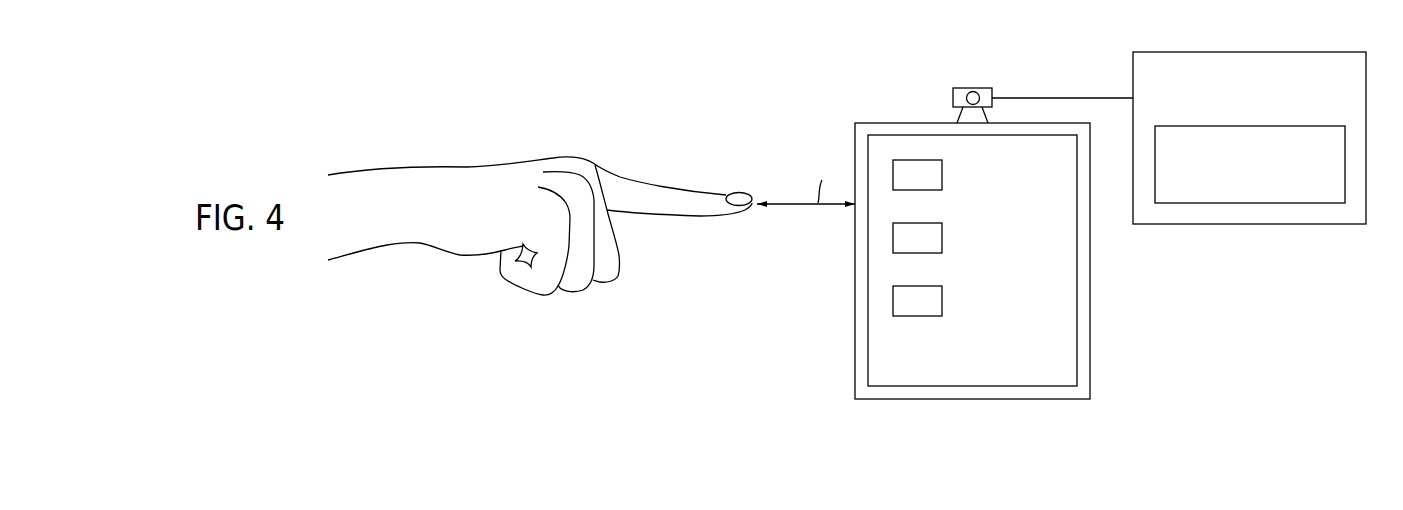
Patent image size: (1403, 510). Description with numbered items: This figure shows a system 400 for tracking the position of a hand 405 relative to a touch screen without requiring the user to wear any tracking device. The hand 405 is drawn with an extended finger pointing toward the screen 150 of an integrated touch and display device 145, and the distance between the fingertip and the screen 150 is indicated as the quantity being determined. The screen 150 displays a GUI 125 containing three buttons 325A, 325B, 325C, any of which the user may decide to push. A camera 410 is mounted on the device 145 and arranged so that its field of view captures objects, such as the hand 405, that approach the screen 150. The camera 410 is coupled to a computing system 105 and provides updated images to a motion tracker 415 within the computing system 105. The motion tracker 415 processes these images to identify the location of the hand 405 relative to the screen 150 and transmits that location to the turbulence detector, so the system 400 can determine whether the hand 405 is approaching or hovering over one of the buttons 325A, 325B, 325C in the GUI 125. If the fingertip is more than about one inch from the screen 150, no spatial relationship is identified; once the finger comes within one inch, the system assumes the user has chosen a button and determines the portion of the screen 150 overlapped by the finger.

The system 400 is at (417, 87).
The hand 405 is at (462, 167).
The camera 410 is at (972, 90).
The integrated touch and display device 145 is at (918, 122).
The screen 150 is at (1077, 267).
The GUI 125 is at (1052, 353).
The button 325A is at (942, 170).
The button 325B is at (942, 233).
The button 325C is at (942, 296).
The computing system 105 is at (1267, 115).
The motion tracker 415 is at (1267, 192).